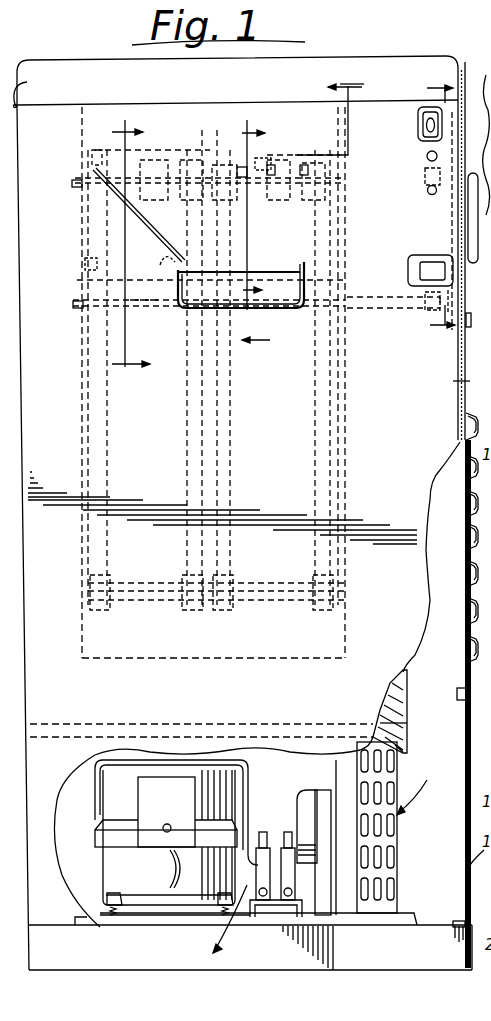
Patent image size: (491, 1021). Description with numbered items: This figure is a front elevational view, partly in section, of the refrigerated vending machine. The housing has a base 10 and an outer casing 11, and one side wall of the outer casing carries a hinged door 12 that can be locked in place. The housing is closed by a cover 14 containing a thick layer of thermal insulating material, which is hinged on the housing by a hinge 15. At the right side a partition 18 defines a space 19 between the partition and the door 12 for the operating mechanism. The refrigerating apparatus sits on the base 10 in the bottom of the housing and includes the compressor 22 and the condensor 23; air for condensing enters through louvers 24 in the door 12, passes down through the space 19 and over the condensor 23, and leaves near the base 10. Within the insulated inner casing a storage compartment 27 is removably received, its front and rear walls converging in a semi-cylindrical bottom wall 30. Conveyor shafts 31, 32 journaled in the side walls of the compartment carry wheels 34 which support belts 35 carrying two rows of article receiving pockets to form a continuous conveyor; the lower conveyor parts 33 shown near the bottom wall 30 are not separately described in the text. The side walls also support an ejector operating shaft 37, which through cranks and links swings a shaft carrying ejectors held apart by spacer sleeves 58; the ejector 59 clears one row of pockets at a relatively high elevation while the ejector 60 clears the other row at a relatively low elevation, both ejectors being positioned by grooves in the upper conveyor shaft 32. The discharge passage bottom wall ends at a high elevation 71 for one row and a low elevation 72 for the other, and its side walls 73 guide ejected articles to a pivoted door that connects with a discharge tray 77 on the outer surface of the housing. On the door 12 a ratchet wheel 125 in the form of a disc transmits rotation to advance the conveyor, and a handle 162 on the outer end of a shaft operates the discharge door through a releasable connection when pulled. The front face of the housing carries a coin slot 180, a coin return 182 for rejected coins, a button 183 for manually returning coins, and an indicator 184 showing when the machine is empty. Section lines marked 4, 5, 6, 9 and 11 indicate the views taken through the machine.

The cabinet section 4 is at (487, 335).
The section line 5 is at (131, 249).
The section line 6 is at (248, 215).
The section line 9 is at (441, 210).
The base 10 is at (360, 958).
The outer casing 11 is at (366, 230).
The door 12 is at (468, 694).
The cover 14 is at (307, 66).
The hinge 15 is at (31, 91).
The partition 18 is at (408, 704).
The space 19 is at (451, 661).
The compressor 22 is at (117, 866).
The condensor 23 is at (378, 848).
The louvers 24 is at (466, 537).
The storage compartment 27 is at (222, 660).
The semi-cylindrical bottom wall 30 is at (283, 660).
The conveyor shaft 31 is at (145, 600).
The upper conveyor shaft 32 is at (261, 157).
The lower shelf brackets 33 is at (183, 582).
The wheels 34 is at (97, 160).
The belts 35 is at (186, 477).
The ejector operating shaft 37 is at (138, 308).
The spacer sleeves 58 is at (85, 262).
The ejector 59 is at (160, 265).
The ejector 60 is at (303, 253).
The high elevation 71 is at (155, 150).
The low elevation 72 is at (278, 152).
The side walls 73 is at (156, 236).
The discharge tray 77 is at (277, 308).
The ratchet wheel 125 is at (453, 216).
The handle 162 is at (470, 242).
The coin slot 180 is at (428, 124).
The coin return 182 is at (412, 256).
The button 183 is at (428, 190).
The indicator 184 is at (427, 155).